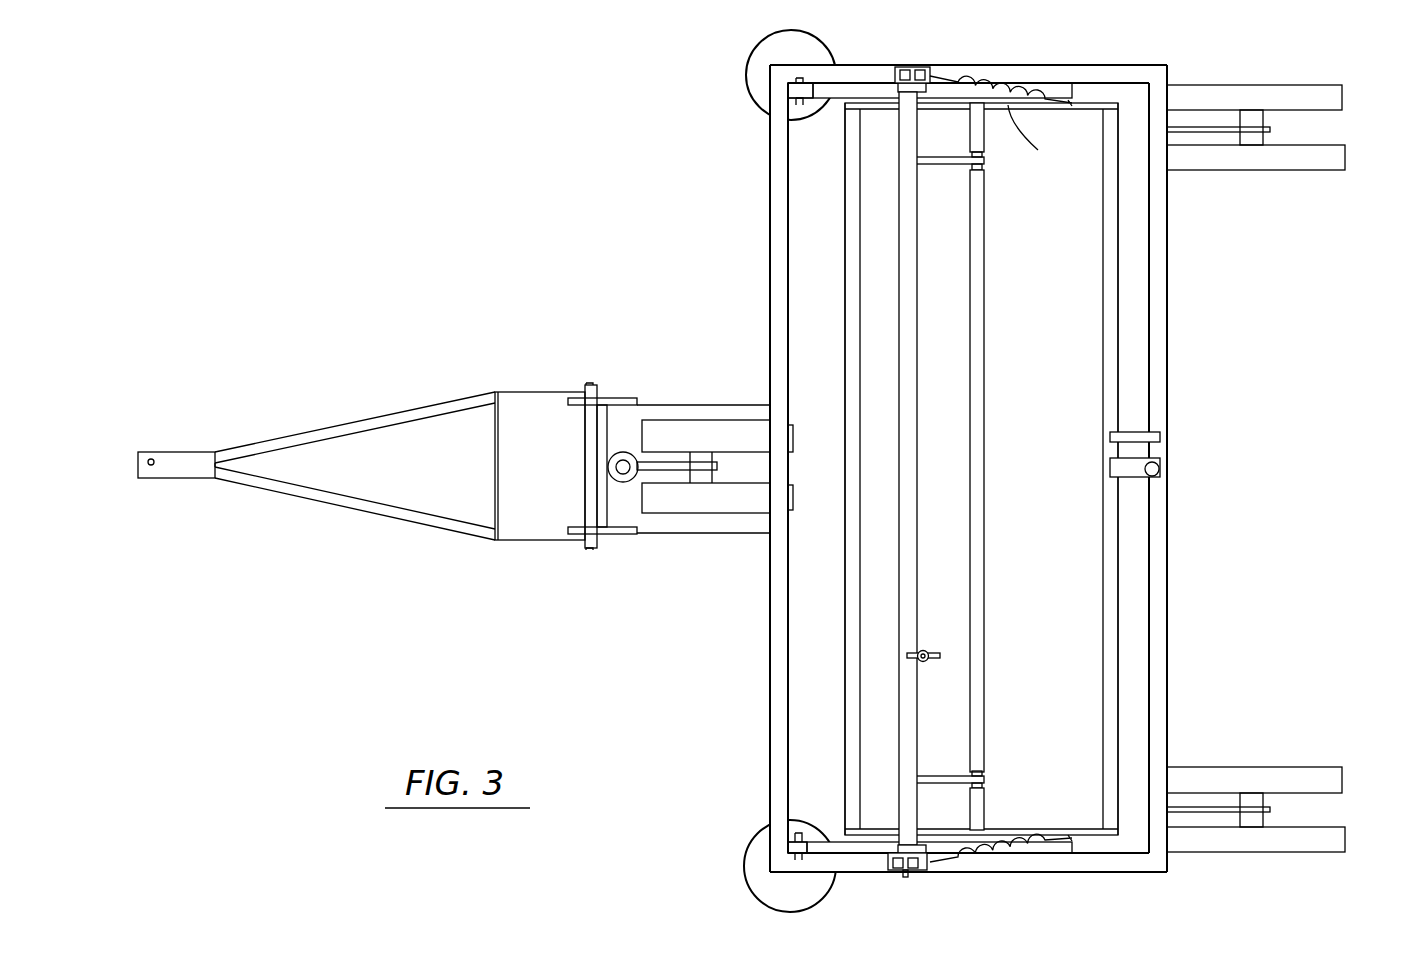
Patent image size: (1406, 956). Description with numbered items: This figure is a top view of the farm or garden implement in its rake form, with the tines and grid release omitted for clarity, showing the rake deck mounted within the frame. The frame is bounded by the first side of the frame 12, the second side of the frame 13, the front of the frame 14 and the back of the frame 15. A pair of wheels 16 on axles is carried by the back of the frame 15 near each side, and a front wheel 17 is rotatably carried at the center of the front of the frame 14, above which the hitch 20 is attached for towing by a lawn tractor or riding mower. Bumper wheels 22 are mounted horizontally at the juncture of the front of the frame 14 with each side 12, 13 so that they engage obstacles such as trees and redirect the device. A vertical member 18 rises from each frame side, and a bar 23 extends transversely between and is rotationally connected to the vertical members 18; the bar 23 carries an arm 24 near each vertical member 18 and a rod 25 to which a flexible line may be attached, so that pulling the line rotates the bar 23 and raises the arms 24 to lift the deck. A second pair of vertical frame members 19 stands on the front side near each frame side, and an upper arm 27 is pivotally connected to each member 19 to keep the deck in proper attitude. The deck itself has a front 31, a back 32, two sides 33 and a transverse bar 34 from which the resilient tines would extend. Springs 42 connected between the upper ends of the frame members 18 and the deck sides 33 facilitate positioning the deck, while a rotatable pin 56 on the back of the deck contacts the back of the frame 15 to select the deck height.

The first side of the frame 12 is at (1070, 862).
The second side of the frame 13 is at (1078, 66).
The front of the frame 14 is at (776, 277).
The back of the frame 15 is at (1158, 332).
The wheels 16 is at (1342, 100).
The front wheel 17 is at (710, 433).
The vertical member 18 is at (918, 66).
The vertical frame members 19 is at (797, 92).
The hitch 20 is at (343, 423).
The bumper wheels 22 is at (752, 58).
The bar 23 is at (907, 512).
The arm 24 is at (957, 167).
The rod 25 is at (930, 662).
The upper arm 27 is at (838, 103).
The front of the deck 31 is at (852, 562).
The back of the deck 32 is at (1110, 680).
The sides of the deck 33 is at (1010, 105).
The transverse bar 34 is at (978, 584).
The springs 42 is at (1047, 92).
The rotatable pin 56 is at (1162, 468).